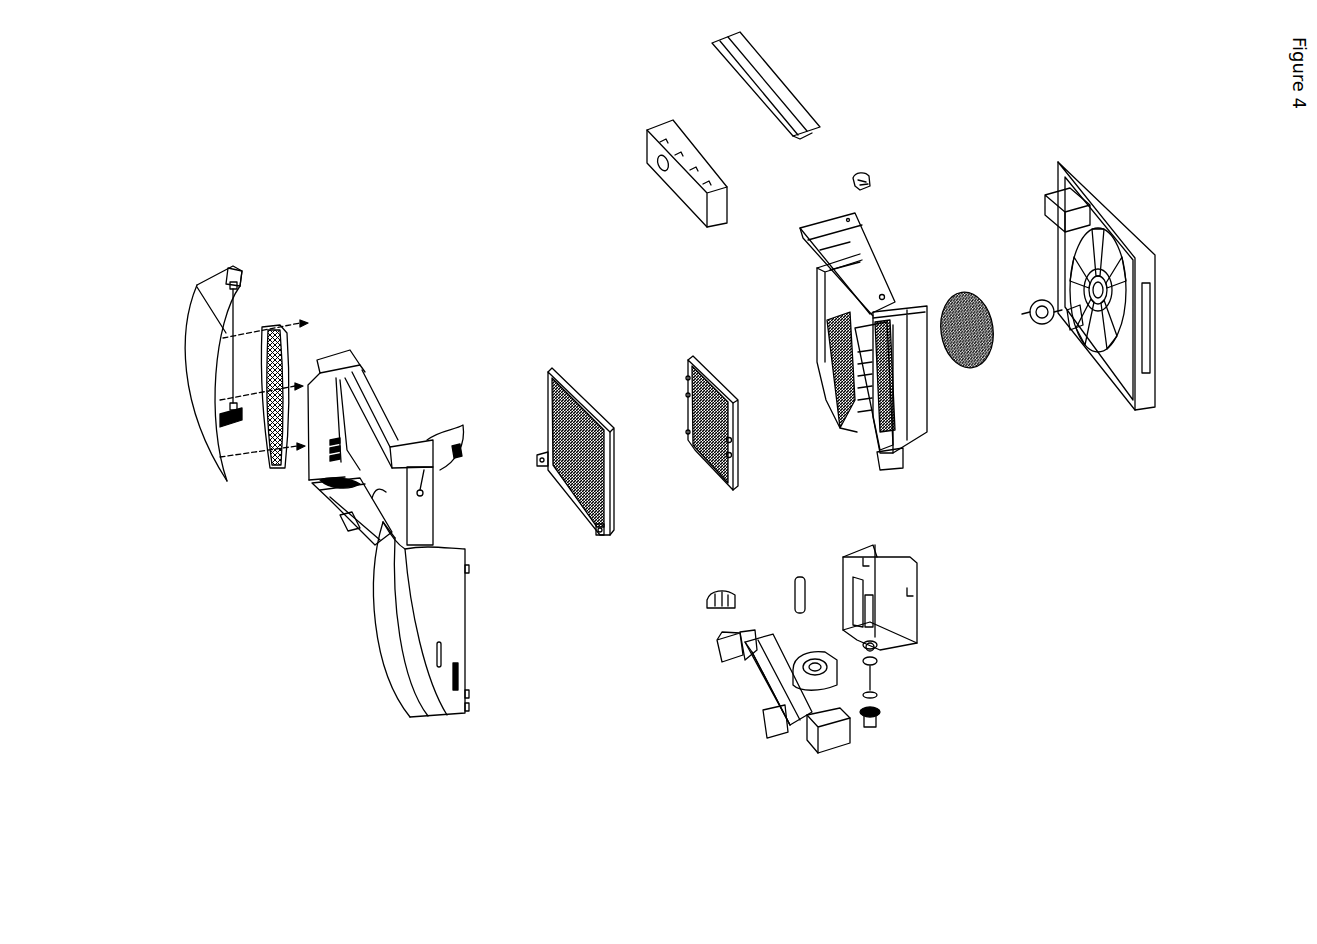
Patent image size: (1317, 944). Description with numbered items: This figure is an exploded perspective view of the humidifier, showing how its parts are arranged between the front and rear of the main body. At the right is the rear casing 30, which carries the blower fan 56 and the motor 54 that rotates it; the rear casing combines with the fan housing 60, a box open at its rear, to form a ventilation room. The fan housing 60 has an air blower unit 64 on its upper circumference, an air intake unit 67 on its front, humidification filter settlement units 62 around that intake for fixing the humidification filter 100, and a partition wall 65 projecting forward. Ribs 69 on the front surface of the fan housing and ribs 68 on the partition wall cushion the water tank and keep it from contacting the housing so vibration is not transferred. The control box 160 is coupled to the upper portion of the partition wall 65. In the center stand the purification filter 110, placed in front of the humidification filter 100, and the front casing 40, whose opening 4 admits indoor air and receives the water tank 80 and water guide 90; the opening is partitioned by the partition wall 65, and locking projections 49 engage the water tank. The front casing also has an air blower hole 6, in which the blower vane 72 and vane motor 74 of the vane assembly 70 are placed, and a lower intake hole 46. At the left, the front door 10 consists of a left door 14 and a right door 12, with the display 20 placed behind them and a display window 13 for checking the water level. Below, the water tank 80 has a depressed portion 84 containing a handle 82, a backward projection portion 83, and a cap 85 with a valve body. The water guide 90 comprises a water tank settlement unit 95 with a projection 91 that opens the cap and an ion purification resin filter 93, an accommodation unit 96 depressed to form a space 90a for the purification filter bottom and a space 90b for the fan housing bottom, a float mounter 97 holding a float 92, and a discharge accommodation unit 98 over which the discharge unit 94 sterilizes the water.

The opening 4 is at (323, 520).
The air blower hole 6 is at (366, 398).
The front door 10 is at (361, 481).
The right door 12 is at (392, 619).
The display window 13 is at (442, 655).
The left door 14 is at (189, 478).
The display 20 is at (284, 323).
The rear casing 30 is at (1088, 329).
The front casing 40 is at (364, 427).
The lower intake hole 46 is at (324, 541).
The locking projection 49 is at (460, 438).
The motor 54 is at (1042, 342).
The blower fan 56 is at (977, 368).
The fan housing 60 is at (865, 361).
The humidification filter settlement unit 62 is at (818, 310).
The air blower unit 64 is at (880, 302).
The partition wall 65 is at (847, 400).
The air intake unit 67 is at (820, 327).
The ribs 68 is at (863, 413).
The ribs 69 is at (880, 470).
The handle assembly 70 is at (831, 111).
The blower vane 72 is at (797, 110).
The vane motor 74 is at (866, 176).
The water tank 80 is at (889, 633).
The handle 82 is at (913, 643).
The backward projection portion 83 is at (911, 603).
The depressed portion 84 is at (858, 600).
The cap 85 is at (878, 720).
The water guide 90 is at (734, 671).
The space 90a is at (760, 697).
The space 90b is at (780, 667).
The projection 91 is at (798, 730).
The float 92 is at (707, 603).
The ion purification resin filter 93 is at (834, 677).
The discharge unit 94 is at (791, 593).
The water tank settlement unit 95 is at (764, 730).
The accommodation unit 96 is at (758, 688).
The float mounter 97 is at (723, 650).
The discharge accommodation unit 98 is at (744, 637).
The humidification filter 100 is at (691, 356).
The purification filter 110 is at (551, 362).
The control box 160 is at (647, 147).